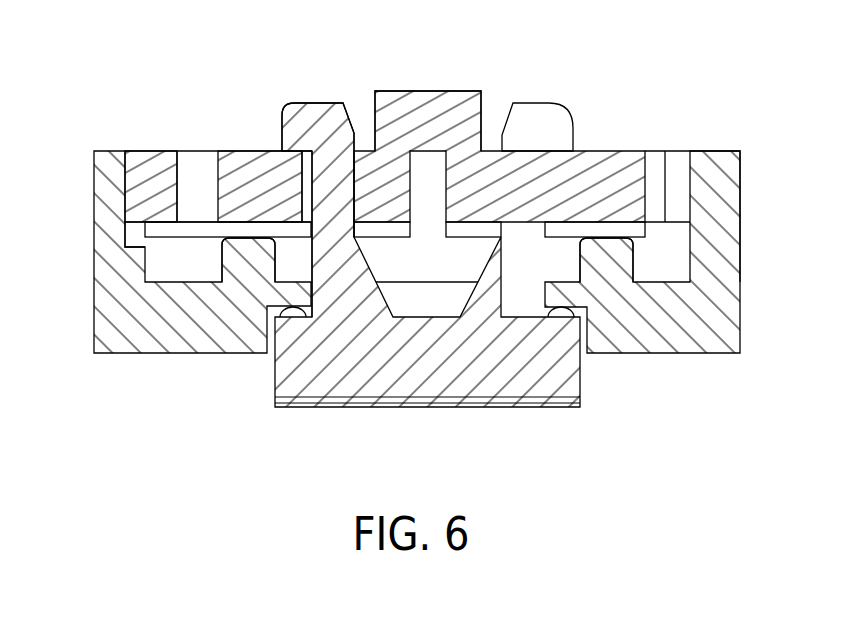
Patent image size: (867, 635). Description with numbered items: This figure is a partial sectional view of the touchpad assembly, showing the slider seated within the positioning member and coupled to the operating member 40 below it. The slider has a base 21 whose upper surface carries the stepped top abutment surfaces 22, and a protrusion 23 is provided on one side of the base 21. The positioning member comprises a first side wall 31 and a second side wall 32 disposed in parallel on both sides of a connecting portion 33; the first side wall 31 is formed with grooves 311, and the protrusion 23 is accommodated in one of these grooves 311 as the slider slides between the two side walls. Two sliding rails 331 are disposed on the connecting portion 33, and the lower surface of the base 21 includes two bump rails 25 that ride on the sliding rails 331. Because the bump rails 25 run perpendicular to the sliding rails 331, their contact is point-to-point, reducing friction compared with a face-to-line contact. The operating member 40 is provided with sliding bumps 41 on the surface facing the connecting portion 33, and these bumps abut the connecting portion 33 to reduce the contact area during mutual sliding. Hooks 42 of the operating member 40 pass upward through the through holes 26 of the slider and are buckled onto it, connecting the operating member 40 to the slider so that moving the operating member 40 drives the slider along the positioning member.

The base 21 is at (593, 168).
The top abutment surfaces 22 is at (428, 100).
The protrusion 23 is at (154, 165).
The bump rails 25 is at (198, 234).
The through holes 26 is at (361, 172).
The first side wall 31 is at (112, 313).
The grooves 311 is at (135, 238).
The second side wall 32 is at (724, 245).
The connecting portion 33 is at (710, 340).
The sliding rails 331 is at (243, 242).
The operating member 40 is at (449, 362).
The sliding bumps 41 is at (283, 311).
The hooks 42 is at (322, 130).